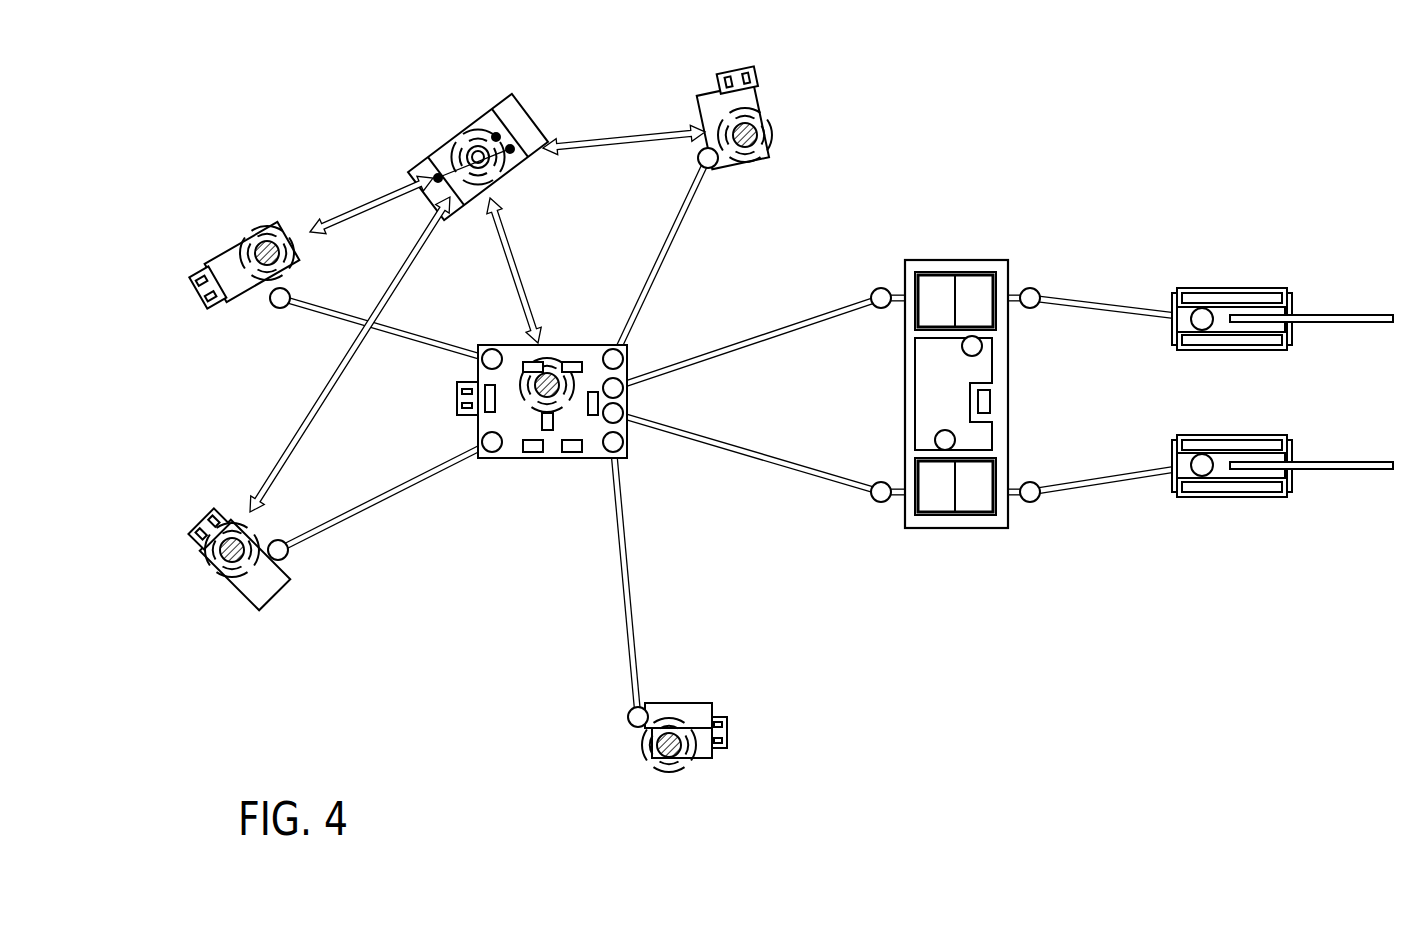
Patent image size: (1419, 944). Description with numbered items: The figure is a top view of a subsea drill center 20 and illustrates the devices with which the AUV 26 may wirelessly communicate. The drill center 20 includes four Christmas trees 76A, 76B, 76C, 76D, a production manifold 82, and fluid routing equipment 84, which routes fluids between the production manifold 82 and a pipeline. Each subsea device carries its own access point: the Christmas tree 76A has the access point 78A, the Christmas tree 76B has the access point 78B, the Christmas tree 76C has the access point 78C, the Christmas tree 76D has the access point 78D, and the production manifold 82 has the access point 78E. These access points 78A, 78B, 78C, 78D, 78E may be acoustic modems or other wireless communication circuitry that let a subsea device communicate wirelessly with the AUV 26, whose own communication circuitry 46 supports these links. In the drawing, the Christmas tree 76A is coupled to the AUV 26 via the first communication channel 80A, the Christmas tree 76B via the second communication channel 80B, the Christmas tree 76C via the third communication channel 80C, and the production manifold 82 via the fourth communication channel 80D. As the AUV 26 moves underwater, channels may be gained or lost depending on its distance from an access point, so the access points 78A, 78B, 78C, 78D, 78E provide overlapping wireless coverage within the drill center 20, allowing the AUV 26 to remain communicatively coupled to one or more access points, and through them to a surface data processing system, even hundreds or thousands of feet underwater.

The drill center 20 is at (1100, 146).
The AUV 26 is at (430, 160).
The communication circuitry 46 is at (476, 114).
The Christmas tree 76A is at (700, 112).
The Christmas tree 76B is at (238, 284).
The Christmas tree 76C is at (258, 590).
The Christmas tree 76D is at (696, 702).
The access point 78A is at (790, 130).
The access point 78B is at (252, 210).
The access point 78C is at (196, 523).
The access point 78D is at (650, 790).
The access point 78E is at (580, 345).
The first communication channel 80A is at (612, 148).
The second communication channel 80B is at (370, 204).
The third communication channel 80C is at (298, 430).
The fourth communication channel 80D is at (520, 268).
The production manifold 82 is at (500, 458).
The fluid routing equipment 84 is at (916, 243).